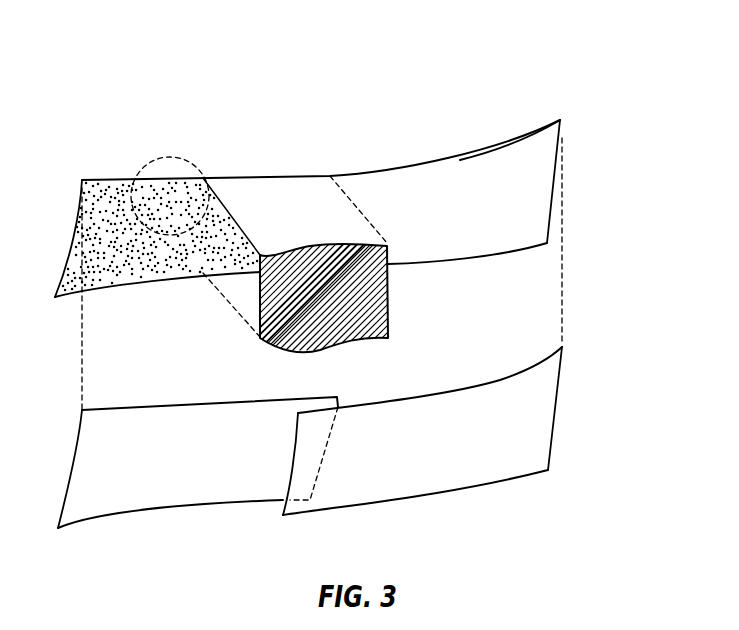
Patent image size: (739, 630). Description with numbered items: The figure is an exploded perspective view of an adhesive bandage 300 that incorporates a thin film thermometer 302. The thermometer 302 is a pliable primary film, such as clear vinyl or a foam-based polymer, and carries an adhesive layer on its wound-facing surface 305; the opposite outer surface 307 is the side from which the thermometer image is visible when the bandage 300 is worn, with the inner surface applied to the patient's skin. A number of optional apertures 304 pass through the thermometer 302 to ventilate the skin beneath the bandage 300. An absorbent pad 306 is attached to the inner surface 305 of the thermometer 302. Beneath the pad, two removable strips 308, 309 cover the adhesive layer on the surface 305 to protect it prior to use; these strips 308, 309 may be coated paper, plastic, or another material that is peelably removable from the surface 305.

The adhesive bandage 300 is at (548, 52).
The thermometer 302 is at (471, 226).
The optional apertures 304 is at (170, 157).
The wound-facing surface 305 is at (498, 163).
The absorbent pad 306 is at (390, 303).
The outer surface 307 is at (277, 197).
The removable strip 308 is at (187, 502).
The removable strip 309 is at (448, 497).